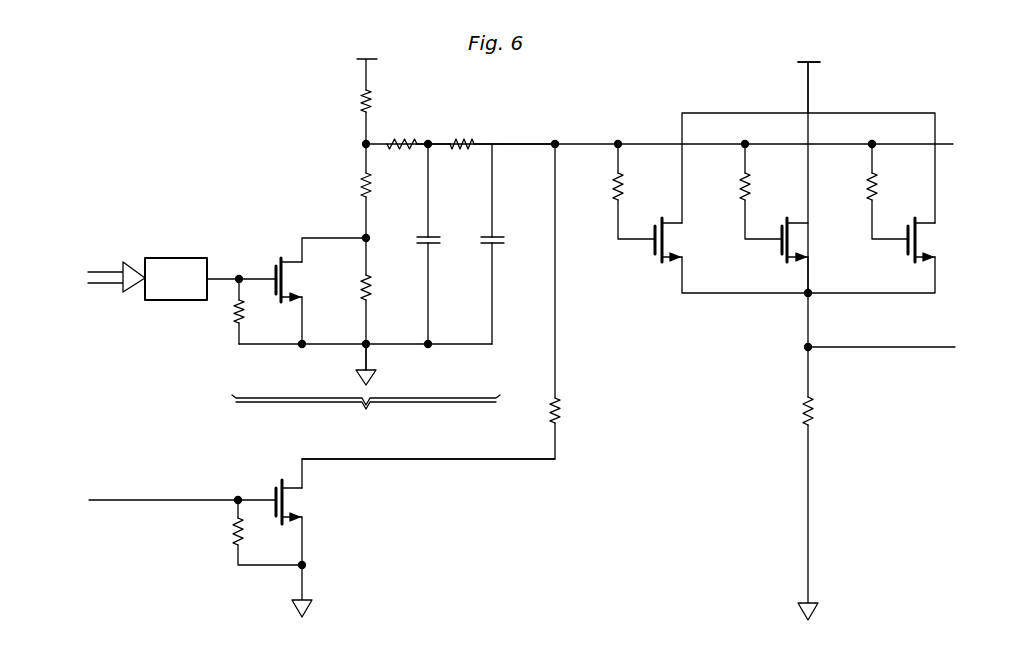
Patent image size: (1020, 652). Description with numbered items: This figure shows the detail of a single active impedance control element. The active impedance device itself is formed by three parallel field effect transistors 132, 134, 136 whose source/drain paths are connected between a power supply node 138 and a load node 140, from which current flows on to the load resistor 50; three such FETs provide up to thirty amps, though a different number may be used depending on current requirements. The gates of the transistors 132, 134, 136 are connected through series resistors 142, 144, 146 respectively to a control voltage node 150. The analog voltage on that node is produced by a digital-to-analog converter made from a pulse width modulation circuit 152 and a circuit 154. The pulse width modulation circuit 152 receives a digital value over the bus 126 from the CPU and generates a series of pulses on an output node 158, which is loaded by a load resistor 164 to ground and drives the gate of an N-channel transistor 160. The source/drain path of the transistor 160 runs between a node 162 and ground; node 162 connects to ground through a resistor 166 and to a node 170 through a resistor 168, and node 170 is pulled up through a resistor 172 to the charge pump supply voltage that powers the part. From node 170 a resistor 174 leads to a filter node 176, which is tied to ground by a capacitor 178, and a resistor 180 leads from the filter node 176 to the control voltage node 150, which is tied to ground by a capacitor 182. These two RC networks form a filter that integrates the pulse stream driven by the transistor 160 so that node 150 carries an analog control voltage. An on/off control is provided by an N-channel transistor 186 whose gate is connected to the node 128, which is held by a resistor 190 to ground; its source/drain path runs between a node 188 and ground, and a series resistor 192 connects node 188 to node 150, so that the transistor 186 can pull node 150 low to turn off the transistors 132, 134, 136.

The load resistor 50 is at (815, 412).
The bus 126 is at (110, 270).
The node 128 is at (152, 499).
The field effect transistor 132 is at (658, 252).
The field effect transistor 134 is at (786, 252).
The field effect transistor 136 is at (912, 252).
The power supply node 138 is at (809, 86).
The load node 140 is at (806, 322).
The series resistor 142 is at (612, 190).
The series resistor 144 is at (740, 192).
The series resistor 146 is at (867, 192).
The control voltage node 150 is at (556, 143).
The pulse width modulation circuit 152 is at (156, 258).
The circuit 154 is at (366, 418).
The output node 158 is at (232, 276).
The N-channel transistor 160 is at (276, 263).
The node 162 is at (364, 237).
The load resistor 164 is at (234, 312).
The resistor 166 is at (372, 286).
The resistor 168 is at (363, 187).
The node 170 is at (364, 144).
The resistor 172 is at (362, 100).
The resistor 174 is at (398, 142).
The filter node 176 is at (427, 147).
The capacitor 178 is at (440, 237).
The resistor 180 is at (458, 142).
The capacitor 182 is at (505, 237).
The N-channel transistor 186 is at (274, 490).
The node 188 is at (452, 461).
The resistor 190 is at (233, 532).
The series resistor 192 is at (562, 410).